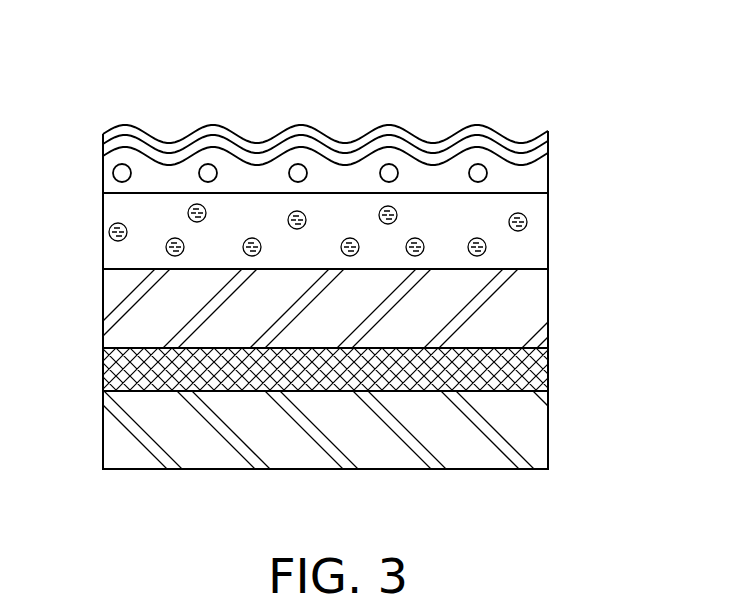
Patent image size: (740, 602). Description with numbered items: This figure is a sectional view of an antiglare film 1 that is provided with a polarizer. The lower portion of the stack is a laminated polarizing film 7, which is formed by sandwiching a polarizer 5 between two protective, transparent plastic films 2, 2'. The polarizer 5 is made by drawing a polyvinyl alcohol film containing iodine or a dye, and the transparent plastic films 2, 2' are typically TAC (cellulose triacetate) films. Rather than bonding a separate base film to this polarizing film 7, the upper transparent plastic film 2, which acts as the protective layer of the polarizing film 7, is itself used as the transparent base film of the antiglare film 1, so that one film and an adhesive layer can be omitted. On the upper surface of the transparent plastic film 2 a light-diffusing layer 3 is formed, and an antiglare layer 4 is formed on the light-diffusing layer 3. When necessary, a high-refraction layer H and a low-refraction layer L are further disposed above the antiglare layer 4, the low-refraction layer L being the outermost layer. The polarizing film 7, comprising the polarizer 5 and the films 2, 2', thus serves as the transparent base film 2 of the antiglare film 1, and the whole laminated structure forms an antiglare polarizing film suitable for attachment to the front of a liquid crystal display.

The antiglare film 1 is at (286, 109).
The low-refraction layer L is at (492, 132).
The high-refraction layer H is at (527, 162).
The antiglare layer 4 is at (525, 183).
The light-diffusing layer 3 is at (525, 252).
The transparent base film 2 is at (373, 308).
The polarizer 5 is at (522, 373).
The transparent plastic film 2' is at (383, 430).
The polarizing film 7 is at (360, 369).